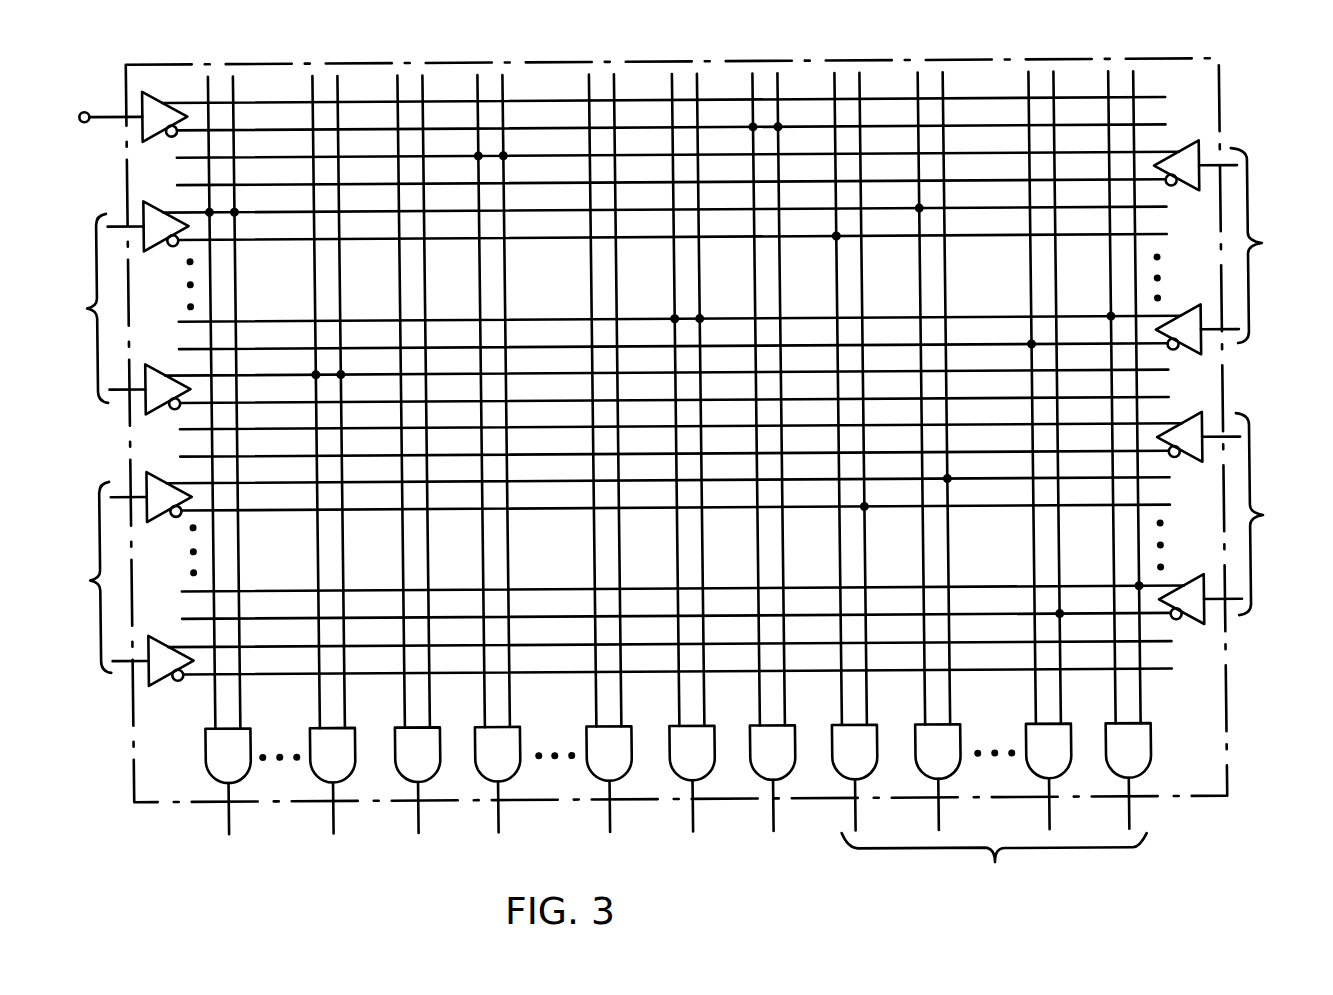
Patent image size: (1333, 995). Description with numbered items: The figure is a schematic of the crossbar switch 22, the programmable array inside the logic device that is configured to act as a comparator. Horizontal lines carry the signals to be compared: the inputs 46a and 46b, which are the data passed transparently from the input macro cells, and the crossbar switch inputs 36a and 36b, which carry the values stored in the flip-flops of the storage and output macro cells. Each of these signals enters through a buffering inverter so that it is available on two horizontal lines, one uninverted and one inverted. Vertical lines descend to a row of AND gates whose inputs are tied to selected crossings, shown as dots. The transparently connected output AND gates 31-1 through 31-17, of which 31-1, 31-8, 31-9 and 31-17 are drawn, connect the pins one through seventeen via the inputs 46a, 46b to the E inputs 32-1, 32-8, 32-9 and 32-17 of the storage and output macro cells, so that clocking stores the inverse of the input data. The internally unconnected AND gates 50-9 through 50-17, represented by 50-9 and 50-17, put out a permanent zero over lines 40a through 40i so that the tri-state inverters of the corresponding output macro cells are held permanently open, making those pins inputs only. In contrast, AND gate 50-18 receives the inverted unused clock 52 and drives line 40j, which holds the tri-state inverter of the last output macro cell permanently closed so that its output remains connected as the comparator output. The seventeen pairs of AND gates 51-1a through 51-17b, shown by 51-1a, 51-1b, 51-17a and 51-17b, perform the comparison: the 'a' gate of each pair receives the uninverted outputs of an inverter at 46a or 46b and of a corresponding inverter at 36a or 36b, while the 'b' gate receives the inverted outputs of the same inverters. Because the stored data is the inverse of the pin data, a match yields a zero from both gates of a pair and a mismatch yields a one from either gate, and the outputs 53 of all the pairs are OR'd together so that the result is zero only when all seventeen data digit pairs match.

The crossbar switch 22 is at (1268, 105).
The inverted unused clock 52 is at (84, 111).
The input of data to be compared 46a is at (113, 254).
The input of data to be compared 46b is at (1235, 247).
The crossbar switch input 36a is at (115, 579).
The crossbar switch input 36b is at (1237, 517).
The output AND gate 31-1 is at (202, 757).
The output AND gate 31-8 is at (306, 750).
The output AND gate 31-9 is at (472, 754).
The output AND gate 31-17 is at (666, 758).
The internally unconnected AND gate 50-9 is at (392, 754).
The internally unconnected AND gate 50-17 is at (583, 742).
The AND gate 50-18 is at (746, 746).
The comparison AND gate 51-1a is at (828, 749).
The comparison AND gate 51-1b is at (912, 750).
The comparison AND gate 51-17a is at (1022, 747).
The comparison AND gate 51-17b is at (1102, 743).
The E input 32-1 is at (230, 824).
The E input 32-8 is at (333, 824).
The E input 32-9 is at (510, 823).
The E input 32-17 is at (701, 823).
The line 40a is at (428, 824).
The line 40i is at (612, 824).
The line 40j is at (777, 823).
The outputs of AND gate pairs 53 is at (994, 836).